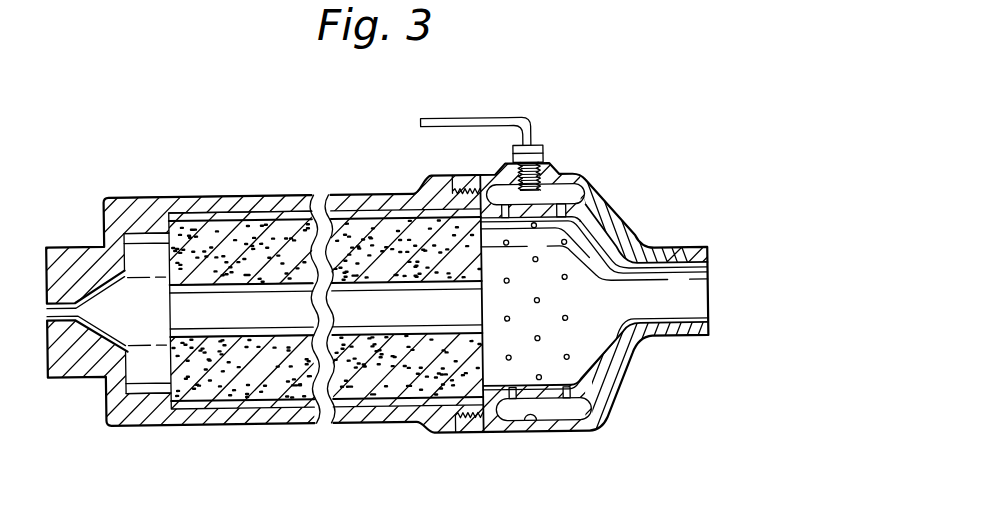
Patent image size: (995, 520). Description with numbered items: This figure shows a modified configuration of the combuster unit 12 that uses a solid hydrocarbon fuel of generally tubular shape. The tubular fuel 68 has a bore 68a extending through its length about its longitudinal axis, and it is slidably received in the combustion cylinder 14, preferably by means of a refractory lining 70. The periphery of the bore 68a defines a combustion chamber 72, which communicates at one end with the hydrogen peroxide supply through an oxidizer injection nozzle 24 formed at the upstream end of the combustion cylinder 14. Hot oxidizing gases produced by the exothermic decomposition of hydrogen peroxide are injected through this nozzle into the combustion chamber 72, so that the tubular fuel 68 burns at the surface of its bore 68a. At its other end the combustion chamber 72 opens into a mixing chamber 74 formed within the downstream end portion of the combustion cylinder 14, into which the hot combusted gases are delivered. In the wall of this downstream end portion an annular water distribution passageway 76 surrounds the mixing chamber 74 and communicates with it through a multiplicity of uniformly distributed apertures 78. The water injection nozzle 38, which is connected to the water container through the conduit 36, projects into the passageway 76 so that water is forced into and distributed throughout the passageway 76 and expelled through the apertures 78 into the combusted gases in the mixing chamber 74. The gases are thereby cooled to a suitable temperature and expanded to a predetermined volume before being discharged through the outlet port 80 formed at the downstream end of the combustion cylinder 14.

The combuster unit 12 is at (233, 191).
The combustion cylinder 14 is at (270, 192).
The oxidizer injection nozzle 24 is at (105, 379).
The conduit 36 is at (457, 117).
The water injection nozzle 38 is at (548, 165).
The tubular fuel 68 is at (262, 381).
The bore 68a is at (274, 333).
The refractory lining 70 is at (203, 413).
The combustion chamber 72 is at (408, 324).
The mixing chamber 74 is at (579, 242).
The annular water distribution passageway 76 is at (528, 416).
The apertures 78 is at (568, 384).
The outlet port 80 is at (648, 321).